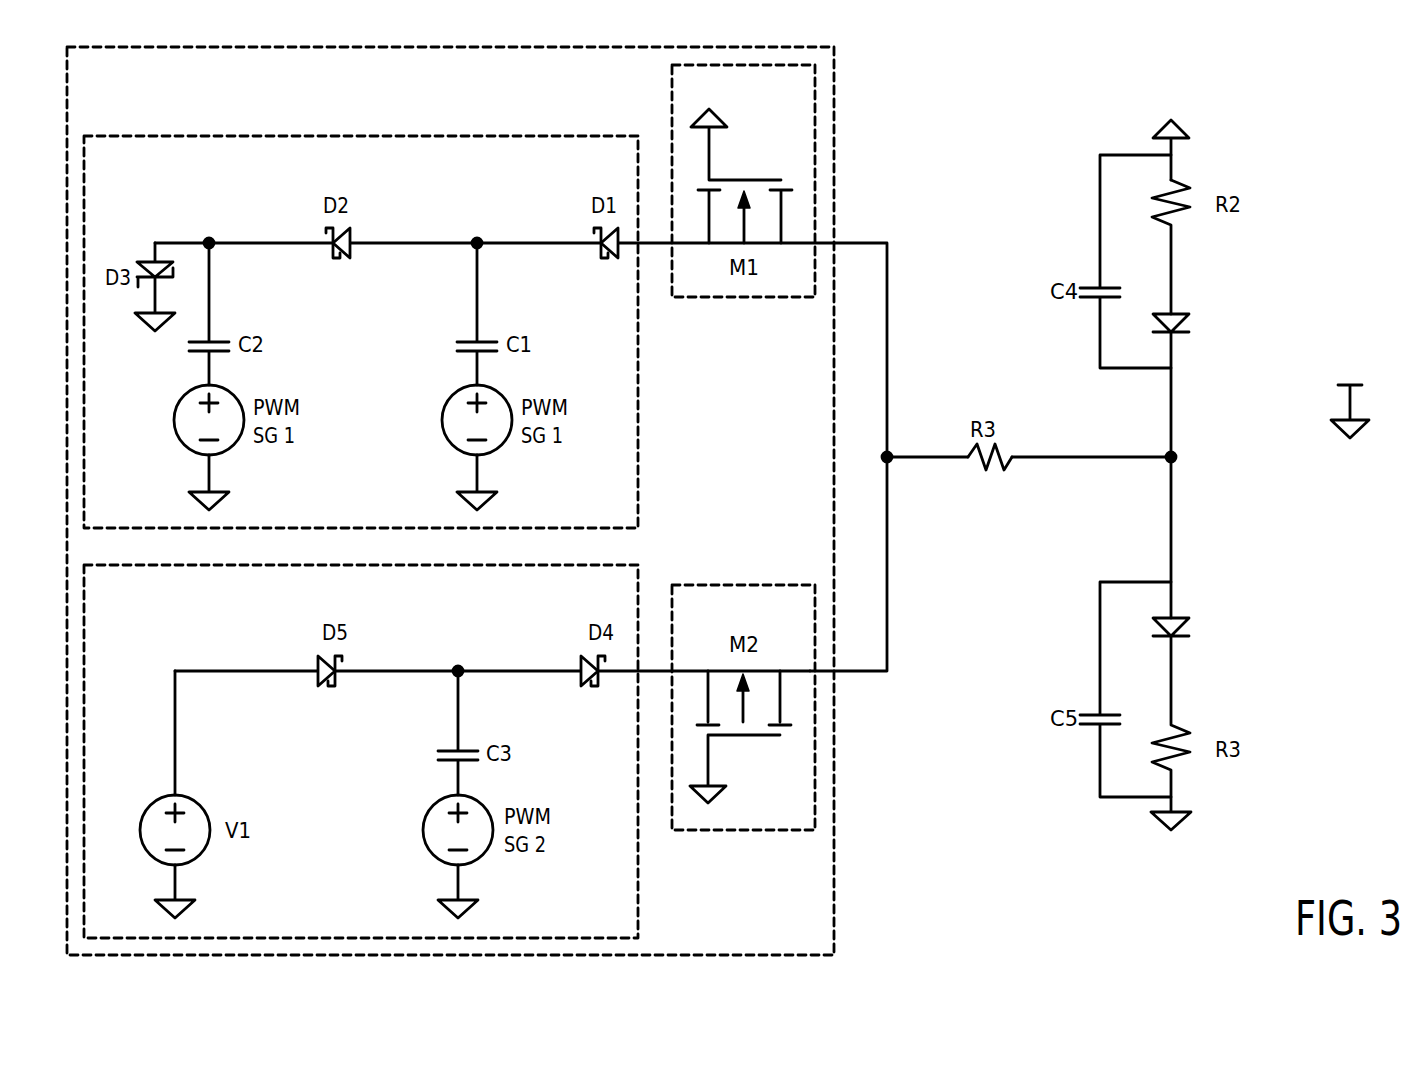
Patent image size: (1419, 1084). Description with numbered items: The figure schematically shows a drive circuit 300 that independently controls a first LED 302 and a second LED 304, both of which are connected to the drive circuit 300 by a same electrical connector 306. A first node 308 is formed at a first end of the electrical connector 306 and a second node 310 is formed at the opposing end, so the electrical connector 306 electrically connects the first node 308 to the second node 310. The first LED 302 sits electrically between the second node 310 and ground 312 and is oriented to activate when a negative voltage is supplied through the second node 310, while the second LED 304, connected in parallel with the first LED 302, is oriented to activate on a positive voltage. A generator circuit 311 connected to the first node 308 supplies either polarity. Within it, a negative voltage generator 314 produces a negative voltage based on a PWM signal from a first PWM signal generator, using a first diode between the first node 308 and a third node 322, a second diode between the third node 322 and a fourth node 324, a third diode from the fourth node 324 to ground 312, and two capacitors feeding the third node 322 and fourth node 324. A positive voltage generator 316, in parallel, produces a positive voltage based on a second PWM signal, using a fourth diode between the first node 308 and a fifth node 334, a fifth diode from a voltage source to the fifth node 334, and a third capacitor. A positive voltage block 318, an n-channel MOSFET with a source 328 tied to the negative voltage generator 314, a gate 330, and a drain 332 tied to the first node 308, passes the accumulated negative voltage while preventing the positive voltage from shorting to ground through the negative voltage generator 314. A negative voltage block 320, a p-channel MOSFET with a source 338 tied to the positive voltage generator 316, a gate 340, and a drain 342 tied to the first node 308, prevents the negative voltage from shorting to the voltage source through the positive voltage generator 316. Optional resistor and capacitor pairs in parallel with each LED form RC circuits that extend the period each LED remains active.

The drive circuit 300 is at (1349, 112).
The first LED 302 is at (1175, 310).
The second LED 304 is at (1175, 614).
The electrical connector 306 is at (1048, 455).
The first node 308 is at (891, 452).
The second node 310 is at (1175, 452).
The generator circuit 311 is at (573, 83).
The ground 312 is at (1355, 420).
The negative voltage generator 314 is at (540, 171).
The positive voltage generator 316 is at (540, 597).
The positive voltage block 318 is at (783, 99).
The negative voltage block 320 is at (783, 617).
The third node 322 is at (480, 247).
The fourth node 324 is at (212, 247).
The source 328 is at (733, 247).
The gate 330 is at (742, 178).
The drain 332 is at (793, 247).
The fifth node 334 is at (461, 675).
The source 338 is at (688, 665).
The gate 340 is at (750, 737).
The drain 342 is at (810, 665).